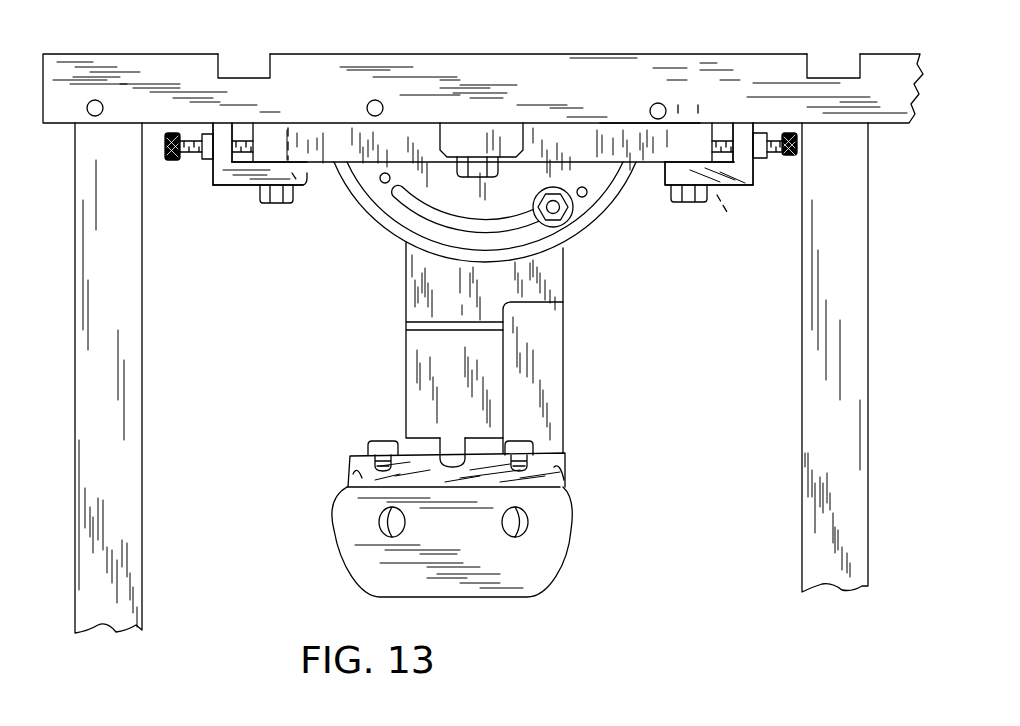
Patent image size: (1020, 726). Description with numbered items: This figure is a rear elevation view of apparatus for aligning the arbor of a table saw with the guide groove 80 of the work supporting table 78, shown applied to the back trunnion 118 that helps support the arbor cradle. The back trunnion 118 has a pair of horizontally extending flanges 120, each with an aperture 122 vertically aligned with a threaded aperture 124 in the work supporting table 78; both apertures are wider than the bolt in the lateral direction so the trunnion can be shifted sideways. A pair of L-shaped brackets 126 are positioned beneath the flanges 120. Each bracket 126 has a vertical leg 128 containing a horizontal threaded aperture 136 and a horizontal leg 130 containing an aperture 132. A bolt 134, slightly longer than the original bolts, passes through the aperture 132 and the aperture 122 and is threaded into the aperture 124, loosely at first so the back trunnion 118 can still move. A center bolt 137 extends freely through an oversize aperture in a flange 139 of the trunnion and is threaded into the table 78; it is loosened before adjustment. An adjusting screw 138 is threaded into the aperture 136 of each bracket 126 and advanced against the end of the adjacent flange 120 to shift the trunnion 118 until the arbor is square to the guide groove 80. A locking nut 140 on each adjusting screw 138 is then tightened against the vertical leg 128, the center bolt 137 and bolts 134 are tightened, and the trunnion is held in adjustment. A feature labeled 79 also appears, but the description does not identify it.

The work supporting table 78 is at (493, 63).
The lower face of cross member 79 is at (632, 58).
The guide groove 80 is at (217, 63).
The back trunnion 118 is at (377, 163).
The horizontally extending flange 120 is at (317, 135).
The aperture 122 is at (294, 138).
The threaded aperture 124 is at (286, 128).
The L-shaped bracket 126 is at (229, 211).
The vertical leg 128 is at (223, 153).
The horizontal leg 130 is at (248, 187).
The aperture 132 is at (298, 184).
The bolt 134 is at (283, 202).
The horizontal threaded aperture 136 is at (225, 142).
The center bolt 137 is at (473, 172).
The adjusting screw 138 is at (175, 135).
The flange 139 is at (512, 130).
The locking nut 140 is at (203, 157).